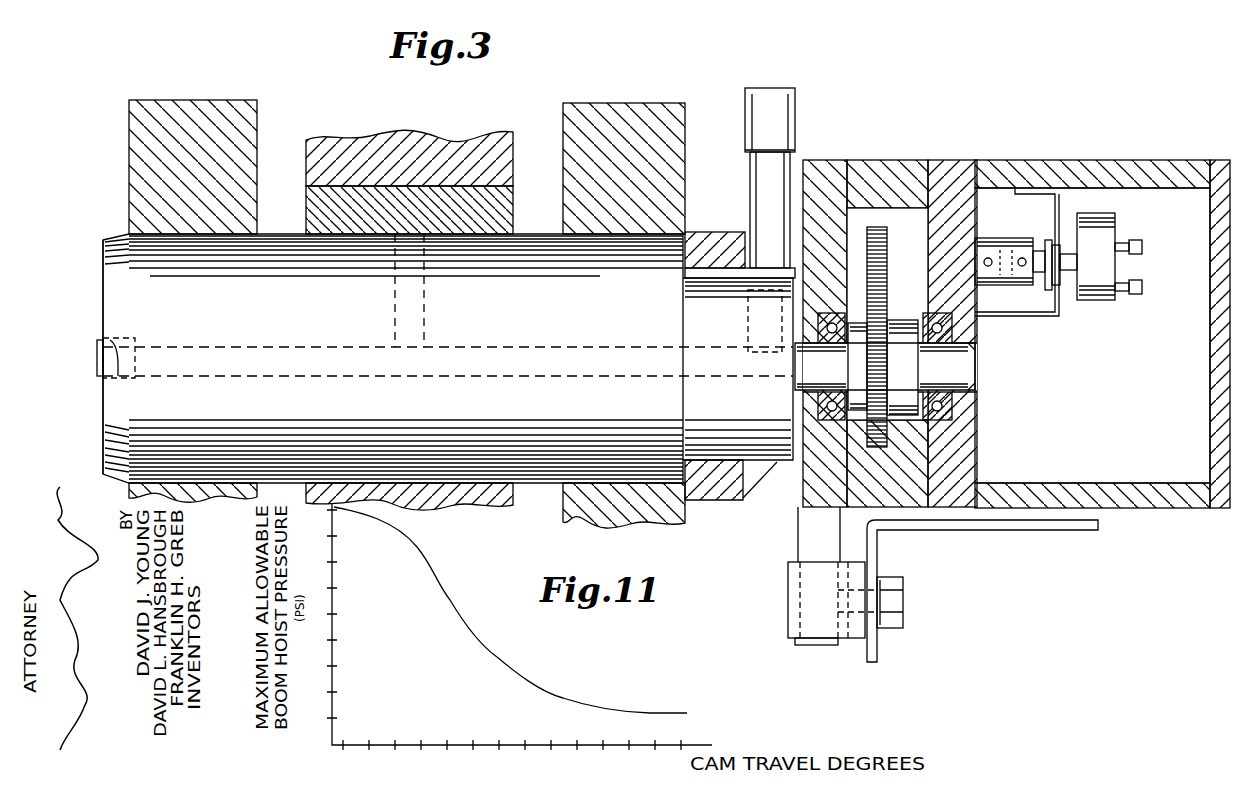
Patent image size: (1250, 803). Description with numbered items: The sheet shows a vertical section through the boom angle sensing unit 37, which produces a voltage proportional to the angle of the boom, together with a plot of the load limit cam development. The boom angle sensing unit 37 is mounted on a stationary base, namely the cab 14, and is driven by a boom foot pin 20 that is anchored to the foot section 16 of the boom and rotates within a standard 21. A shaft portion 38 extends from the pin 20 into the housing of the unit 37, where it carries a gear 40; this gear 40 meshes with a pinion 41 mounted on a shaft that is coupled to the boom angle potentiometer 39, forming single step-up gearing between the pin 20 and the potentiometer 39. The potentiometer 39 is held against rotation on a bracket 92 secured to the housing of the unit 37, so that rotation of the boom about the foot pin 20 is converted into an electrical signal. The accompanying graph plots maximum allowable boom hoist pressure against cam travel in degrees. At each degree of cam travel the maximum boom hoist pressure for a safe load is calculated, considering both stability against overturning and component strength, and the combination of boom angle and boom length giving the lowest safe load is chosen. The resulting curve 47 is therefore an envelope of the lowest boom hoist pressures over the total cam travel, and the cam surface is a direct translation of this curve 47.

In FIG. 3, the cab 14 is at (1048, 530).
In FIG. 3, the foot section 16 is at (206, 100).
In FIG. 3, the boom foot pin 20 is at (515, 234).
In FIG. 3, the standard 21 is at (480, 148).
In FIG. 3, the boom angle sensing unit 37 is at (1048, 151).
In FIG. 3, the shaft portion 38 is at (978, 367).
In FIG. 3, the boom angle potentiometer 39 is at (1100, 215).
In FIG. 3, the gear 40 is at (868, 440).
In FIG. 3, the pinion 41 is at (882, 228).
In FIG. 11, the curve 47 is at (530, 683).
In FIG. 3, the bracket 92 is at (1050, 318).